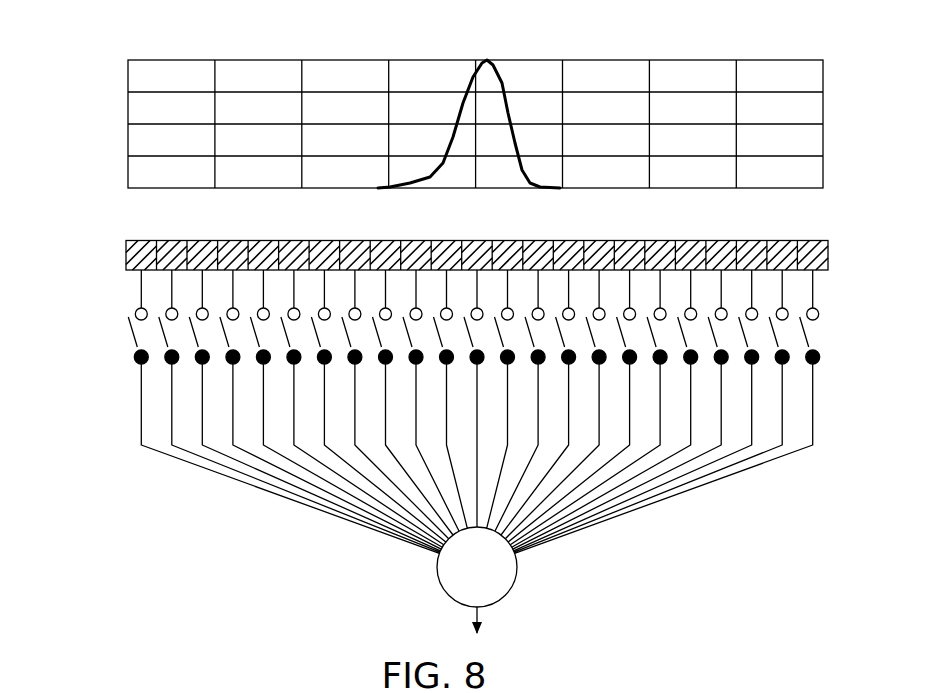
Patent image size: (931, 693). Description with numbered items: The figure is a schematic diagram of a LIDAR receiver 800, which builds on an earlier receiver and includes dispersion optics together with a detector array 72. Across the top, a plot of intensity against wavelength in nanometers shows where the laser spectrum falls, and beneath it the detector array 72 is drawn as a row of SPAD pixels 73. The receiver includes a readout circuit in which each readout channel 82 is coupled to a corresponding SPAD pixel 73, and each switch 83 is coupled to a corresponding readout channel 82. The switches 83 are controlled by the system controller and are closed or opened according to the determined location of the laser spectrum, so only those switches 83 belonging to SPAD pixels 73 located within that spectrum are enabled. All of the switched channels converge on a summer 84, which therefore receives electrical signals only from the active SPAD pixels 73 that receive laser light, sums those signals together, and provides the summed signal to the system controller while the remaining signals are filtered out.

The LIDAR receiver 800 is at (118, 42).
The detector array 72 is at (110, 257).
The SPAD pixel 73 is at (828, 255).
The readout channel 82 is at (125, 293).
The switch 83 is at (116, 358).
The summer 84 is at (439, 567).